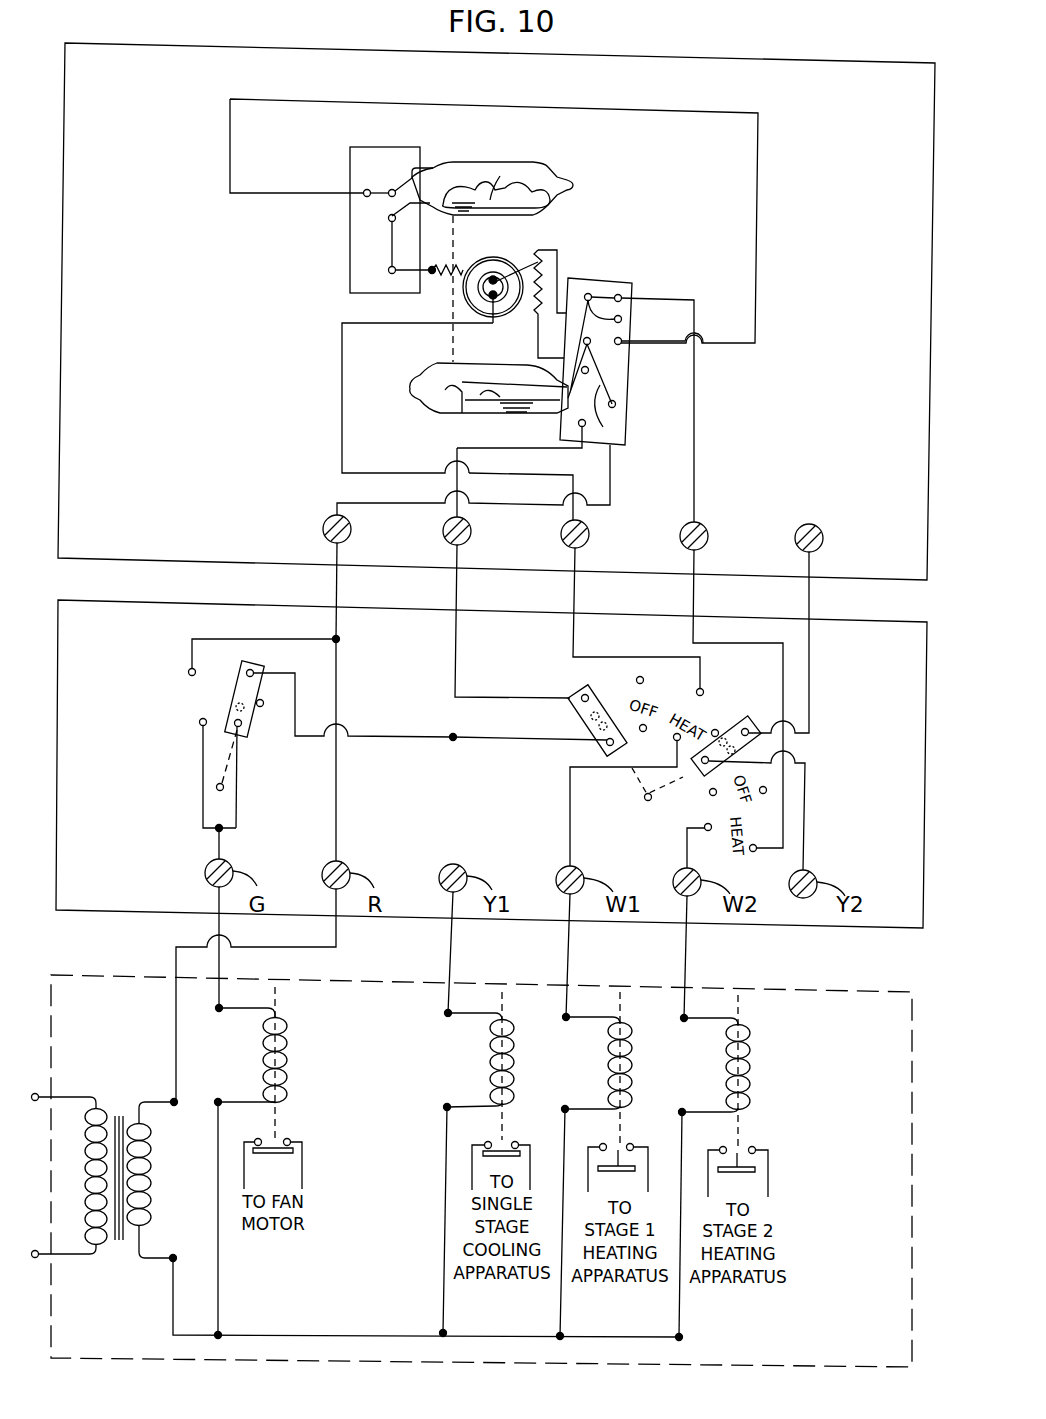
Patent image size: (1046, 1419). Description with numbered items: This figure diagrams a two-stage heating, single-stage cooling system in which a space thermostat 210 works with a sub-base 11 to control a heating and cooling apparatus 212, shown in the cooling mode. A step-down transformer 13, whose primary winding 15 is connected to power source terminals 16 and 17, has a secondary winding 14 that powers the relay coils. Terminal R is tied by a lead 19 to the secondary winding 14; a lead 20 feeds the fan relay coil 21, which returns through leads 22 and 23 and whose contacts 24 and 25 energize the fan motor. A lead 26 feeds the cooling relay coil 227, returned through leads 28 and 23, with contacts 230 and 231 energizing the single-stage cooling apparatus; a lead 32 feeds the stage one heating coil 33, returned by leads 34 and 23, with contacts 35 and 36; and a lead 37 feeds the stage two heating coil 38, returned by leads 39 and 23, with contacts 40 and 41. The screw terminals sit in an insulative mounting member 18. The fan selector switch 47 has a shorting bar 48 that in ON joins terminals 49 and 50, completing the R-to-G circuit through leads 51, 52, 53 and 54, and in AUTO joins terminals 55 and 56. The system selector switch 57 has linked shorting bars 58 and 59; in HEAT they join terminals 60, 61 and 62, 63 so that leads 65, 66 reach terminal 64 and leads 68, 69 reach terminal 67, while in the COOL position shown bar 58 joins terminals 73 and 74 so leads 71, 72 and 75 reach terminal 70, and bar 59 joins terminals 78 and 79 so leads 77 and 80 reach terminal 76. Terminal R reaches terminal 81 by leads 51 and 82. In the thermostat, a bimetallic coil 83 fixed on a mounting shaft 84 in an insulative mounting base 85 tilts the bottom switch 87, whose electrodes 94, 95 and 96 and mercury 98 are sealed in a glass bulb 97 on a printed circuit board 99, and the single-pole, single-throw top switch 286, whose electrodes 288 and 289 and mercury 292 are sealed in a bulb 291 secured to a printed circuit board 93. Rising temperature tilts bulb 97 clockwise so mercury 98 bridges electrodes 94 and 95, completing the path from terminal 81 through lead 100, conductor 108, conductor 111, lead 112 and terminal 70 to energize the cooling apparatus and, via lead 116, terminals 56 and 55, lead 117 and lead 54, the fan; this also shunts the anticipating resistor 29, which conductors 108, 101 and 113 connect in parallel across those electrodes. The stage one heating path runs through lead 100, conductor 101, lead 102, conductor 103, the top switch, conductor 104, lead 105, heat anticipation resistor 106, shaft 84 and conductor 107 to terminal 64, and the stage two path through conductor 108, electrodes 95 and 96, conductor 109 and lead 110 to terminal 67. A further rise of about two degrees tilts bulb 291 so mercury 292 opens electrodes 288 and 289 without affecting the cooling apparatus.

The sub-base 11 is at (848, 616).
The voltage step-down transformer 13 is at (121, 1100).
The secondary winding 14 is at (152, 1196).
The primary winding 15 is at (84, 1196).
The power source terminal 16 is at (35, 1093).
The power source terminal 17 is at (35, 1258).
The insulative mounting member 18 is at (925, 838).
The lead 19 is at (345, 947).
The lead 20 is at (233, 945).
The fan relay operating coil 21 is at (282, 1012).
The lead 22 is at (220, 1297).
The lead 23 is at (173, 1292).
The relay contact 24 is at (258, 1138).
The relay contact 25 is at (288, 1138).
The lead 26 is at (454, 947).
The lead 28 is at (446, 1295).
The anticipating resistor 29 is at (541, 252).
The lead 32 is at (572, 947).
The stage one heating relay operating coil 33 is at (628, 1018).
The lead 34 is at (563, 1296).
The relay contact 35 is at (603, 1143).
The relay contact 36 is at (631, 1143).
The lead 37 is at (689, 947).
The stage two heating relay operating coil 38 is at (746, 1019).
The lead 39 is at (682, 1298).
The relay contact 40 is at (723, 1146).
The relay contact 41 is at (752, 1146).
The fan selector switch 47 is at (179, 645).
The shorting bar 48 is at (262, 707).
The terminal 49 is at (200, 722).
The terminal 50 is at (188, 672).
The lead 51 is at (338, 796).
The lead 52 is at (212, 638).
The lead 53 is at (203, 803).
The lead 54 is at (222, 840).
The terminal 55 is at (241, 727).
The terminal 56 is at (247, 668).
The system selector switch 57 is at (830, 720).
The shorting bar 58 is at (578, 722).
The shorting bar 59 is at (740, 728).
The terminal 60 is at (672, 741).
The terminal 61 is at (703, 690).
The terminal 62 is at (710, 823).
The terminal 63 is at (750, 852).
The thermostat terminal 64 is at (588, 543).
The lead 65 is at (569, 848).
The lead 66 is at (572, 642).
The thermostat terminal 67 is at (707, 545).
The lead 68 is at (688, 850).
The lead 69 is at (692, 640).
The thermostat terminal 70 is at (470, 540).
The lead 71 is at (456, 796).
The lead 72 is at (478, 740).
The terminal 73 is at (604, 743).
The terminal 74 is at (590, 688).
The lead 75 is at (454, 638).
The thermostat terminal 76 is at (822, 547).
The lead 77 is at (808, 792).
The terminal 78 is at (723, 788).
The terminal 79 is at (787, 738).
The lead 80 is at (807, 645).
The thermostat terminal 81 is at (350, 538).
The lead 82 is at (332, 636).
The bimetallic coil 83 is at (496, 317).
The mounting shaft 84 is at (537, 250).
The insulative mounting base 85 is at (672, 70).
The bottom switch 87 is at (407, 403).
The printed circuit board 93 is at (352, 147).
The electrode 94 is at (533, 420).
The electrode 95 is at (445, 415).
The electrode 96 is at (437, 367).
The glass bulb 97 is at (417, 378).
The mercury 98 is at (482, 420).
The printed circuit board 99 is at (600, 277).
The lead 100 is at (612, 468).
The conductor 101 is at (620, 380).
The lead 102 is at (712, 345).
The conductor 103 is at (378, 201).
The conductor 104 is at (390, 243).
The lead 105 is at (412, 275).
The resistor 106 is at (453, 280).
The conductor 107 is at (342, 380).
The conductor 108 is at (617, 426).
The conductor 109 is at (620, 285).
The lead 110 is at (697, 466).
The conductor 111 is at (562, 422).
The lead 112 is at (464, 478).
The conductor 113 is at (632, 328).
The lead 116 is at (366, 733).
The lead 117 is at (240, 772).
The space thermostat 210 is at (815, 55).
The heating and cooling apparatus 212 is at (858, 986).
The cooling relay coil 227 is at (508, 1017).
The relay contact 230 is at (488, 1141).
The relay contact 231 is at (515, 1141).
The top switch 286 is at (585, 187).
The electrode 288 is at (455, 212).
The electrode 289 is at (414, 176).
The glass bulb 291 is at (493, 162).
The mercury 292 is at (494, 197).